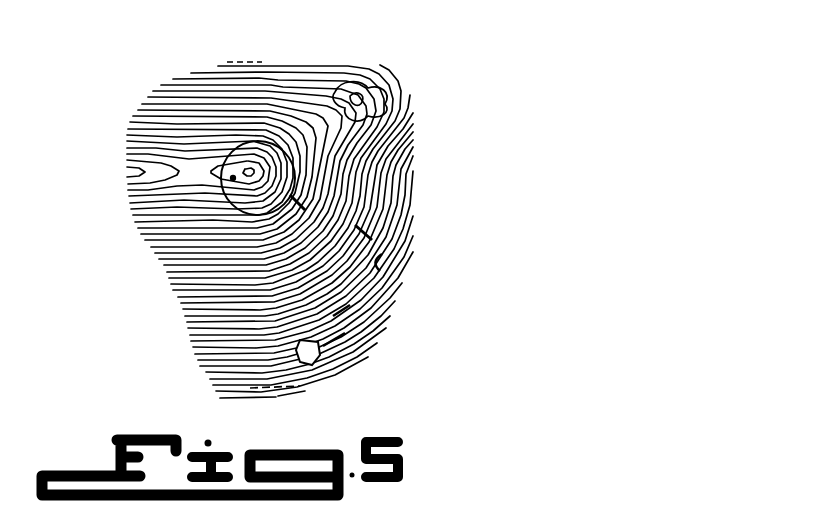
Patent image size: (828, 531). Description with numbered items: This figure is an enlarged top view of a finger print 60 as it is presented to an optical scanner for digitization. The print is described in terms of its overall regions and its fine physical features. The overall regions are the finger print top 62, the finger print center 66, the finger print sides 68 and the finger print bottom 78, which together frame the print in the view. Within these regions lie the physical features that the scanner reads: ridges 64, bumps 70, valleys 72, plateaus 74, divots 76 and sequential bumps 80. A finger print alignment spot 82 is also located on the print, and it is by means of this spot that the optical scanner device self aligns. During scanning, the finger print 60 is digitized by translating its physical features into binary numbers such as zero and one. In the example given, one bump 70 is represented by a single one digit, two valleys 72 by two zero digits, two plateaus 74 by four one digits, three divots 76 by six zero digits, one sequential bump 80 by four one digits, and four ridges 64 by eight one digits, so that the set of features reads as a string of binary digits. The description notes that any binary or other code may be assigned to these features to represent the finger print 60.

The finger print 60 is at (210, 373).
The finger print top 62 is at (258, 57).
The ridges 64 is at (400, 93).
The finger print center 66 is at (298, 202).
The finger print sides 68 is at (368, 234).
The bumps 70 is at (376, 262).
The valleys 72 is at (345, 309).
The plateaus 74 is at (337, 338).
The divots 76 is at (337, 361).
The finger print bottom 78 is at (283, 386).
The sequential bumps 80 is at (222, 146).
The finger print alignment spot 82 is at (232, 178).